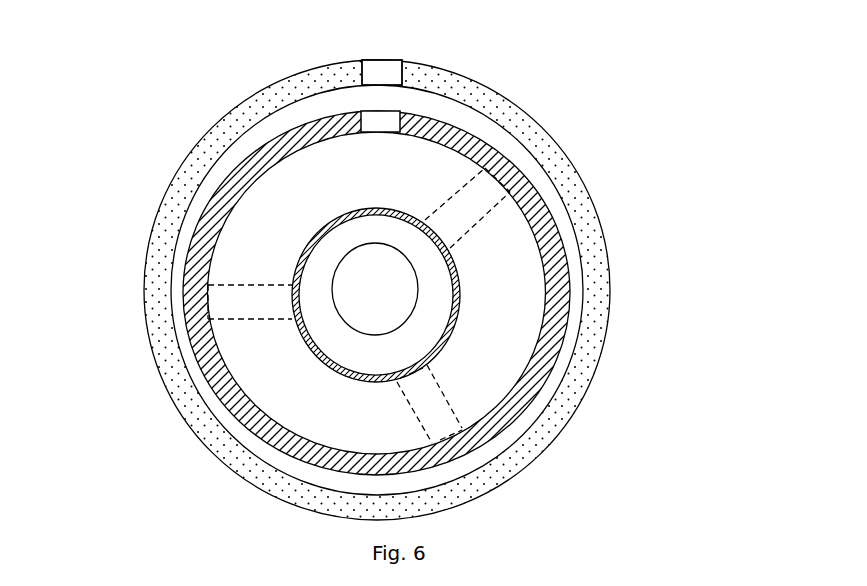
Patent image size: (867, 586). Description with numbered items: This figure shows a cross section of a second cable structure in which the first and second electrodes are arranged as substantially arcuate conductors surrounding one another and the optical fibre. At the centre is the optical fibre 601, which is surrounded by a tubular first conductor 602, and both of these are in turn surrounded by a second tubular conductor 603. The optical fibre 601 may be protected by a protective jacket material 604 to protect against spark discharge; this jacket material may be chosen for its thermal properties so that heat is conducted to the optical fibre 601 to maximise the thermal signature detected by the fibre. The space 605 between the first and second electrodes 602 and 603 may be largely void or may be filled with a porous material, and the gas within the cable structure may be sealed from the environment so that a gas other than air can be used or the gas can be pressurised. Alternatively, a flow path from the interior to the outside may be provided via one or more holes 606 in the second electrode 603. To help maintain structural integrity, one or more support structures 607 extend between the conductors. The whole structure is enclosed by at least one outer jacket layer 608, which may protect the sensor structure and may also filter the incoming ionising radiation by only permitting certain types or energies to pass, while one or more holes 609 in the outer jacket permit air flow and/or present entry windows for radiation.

The optical fibre 601 is at (393, 299).
The tubular first conductor 602 is at (307, 240).
The second tubular conductor 603 is at (205, 346).
The protective jacket material 604 is at (430, 303).
The space 605 is at (520, 250).
The holes 606 is at (397, 113).
The support structures 607 is at (250, 283).
The outer jacket layer 608 is at (565, 153).
The holes 609 is at (365, 65).